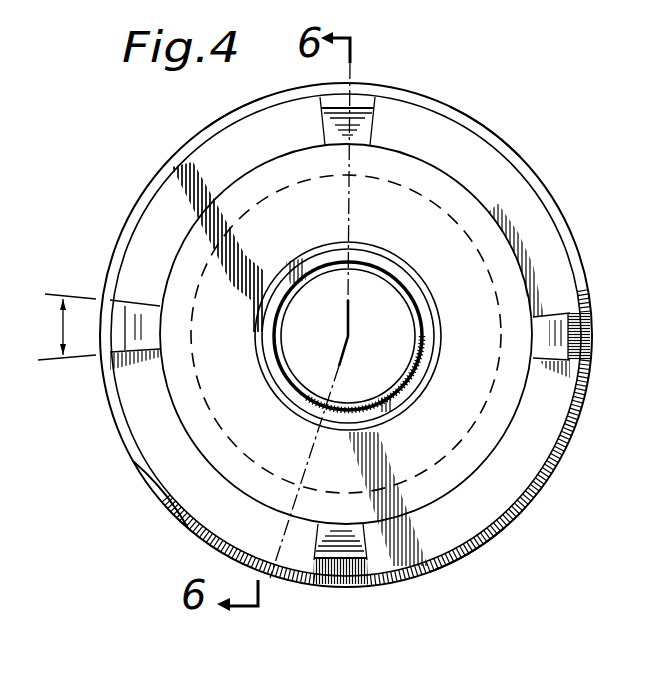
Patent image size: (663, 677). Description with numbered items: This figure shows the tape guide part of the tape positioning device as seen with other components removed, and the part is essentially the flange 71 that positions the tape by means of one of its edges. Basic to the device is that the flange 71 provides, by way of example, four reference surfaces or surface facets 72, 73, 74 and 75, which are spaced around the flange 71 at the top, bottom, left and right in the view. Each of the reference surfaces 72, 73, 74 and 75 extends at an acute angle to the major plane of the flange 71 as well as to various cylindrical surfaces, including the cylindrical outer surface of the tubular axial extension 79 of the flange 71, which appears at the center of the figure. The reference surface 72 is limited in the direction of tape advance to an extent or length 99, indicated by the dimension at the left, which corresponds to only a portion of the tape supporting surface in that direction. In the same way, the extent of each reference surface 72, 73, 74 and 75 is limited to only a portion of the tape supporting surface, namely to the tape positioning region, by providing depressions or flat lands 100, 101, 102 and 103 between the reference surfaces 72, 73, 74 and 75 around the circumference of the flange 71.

The flange 71 is at (348, 335).
The reference surface 72 is at (171, 332).
The reference surface 73 is at (340, 577).
The reference surface 74 is at (530, 345).
The reference surface 75 is at (381, 104).
The tubular axial extension 79 is at (361, 336).
The length 99 is at (62, 327).
The flat land 100 is at (148, 503).
The flat land 101 is at (497, 539).
The flat land 102 is at (493, 127).
The flat land 103 is at (190, 215).